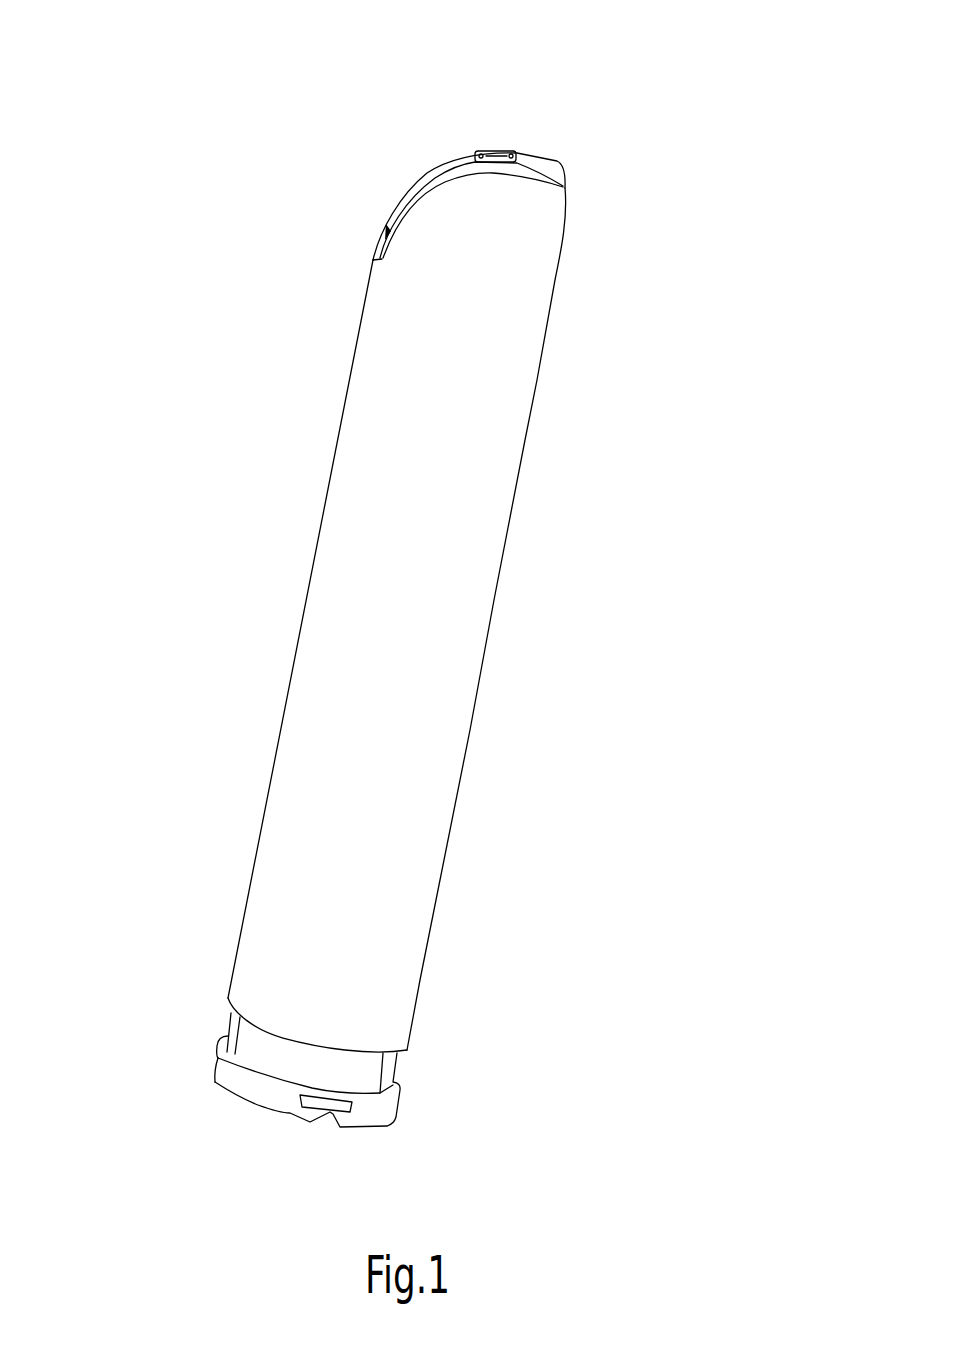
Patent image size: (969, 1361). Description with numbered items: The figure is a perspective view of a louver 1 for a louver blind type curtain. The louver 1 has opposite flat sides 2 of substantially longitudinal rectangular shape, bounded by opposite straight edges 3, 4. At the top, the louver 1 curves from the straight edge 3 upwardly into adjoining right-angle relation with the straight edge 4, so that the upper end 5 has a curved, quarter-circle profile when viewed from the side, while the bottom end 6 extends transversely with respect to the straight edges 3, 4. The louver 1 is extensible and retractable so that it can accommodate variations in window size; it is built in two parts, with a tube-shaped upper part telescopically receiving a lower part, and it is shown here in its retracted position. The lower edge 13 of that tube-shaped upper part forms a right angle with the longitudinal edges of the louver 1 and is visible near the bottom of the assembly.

The louver 1 is at (110, 310).
The flat sides 2 is at (435, 540).
The straight edge 3 is at (297, 640).
The straight edge 4 is at (482, 668).
The upper end cap 5 is at (525, 113).
The bottom end 6 is at (289, 1150).
The lower edge 13 is at (285, 1040).